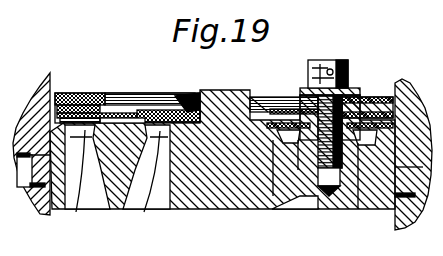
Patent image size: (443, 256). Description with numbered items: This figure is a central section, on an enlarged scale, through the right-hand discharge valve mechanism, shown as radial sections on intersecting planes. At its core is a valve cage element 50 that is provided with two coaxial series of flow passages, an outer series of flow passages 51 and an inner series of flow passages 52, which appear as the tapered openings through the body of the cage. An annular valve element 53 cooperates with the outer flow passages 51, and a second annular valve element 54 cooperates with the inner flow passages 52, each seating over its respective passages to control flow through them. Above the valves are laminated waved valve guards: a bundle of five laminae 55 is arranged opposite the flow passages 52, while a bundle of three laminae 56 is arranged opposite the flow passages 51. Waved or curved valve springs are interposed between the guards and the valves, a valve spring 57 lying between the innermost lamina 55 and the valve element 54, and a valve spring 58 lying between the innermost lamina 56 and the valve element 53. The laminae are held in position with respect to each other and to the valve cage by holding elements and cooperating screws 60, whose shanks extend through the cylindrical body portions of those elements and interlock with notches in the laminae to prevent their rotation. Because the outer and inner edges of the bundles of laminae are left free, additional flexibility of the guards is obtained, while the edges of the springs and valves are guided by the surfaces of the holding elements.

The valve cage element 50 is at (208, 192).
The flow passages 51 is at (82, 206).
The flow passages 52 is at (143, 206).
The annular valve element 53 is at (48, 118).
The annular valve element 54 is at (168, 112).
The laminae 55 is at (152, 95).
The laminae 56 is at (77, 92).
The valve spring 57 is at (192, 100).
The valve spring 58 is at (97, 112).
The screws 60 is at (340, 62).